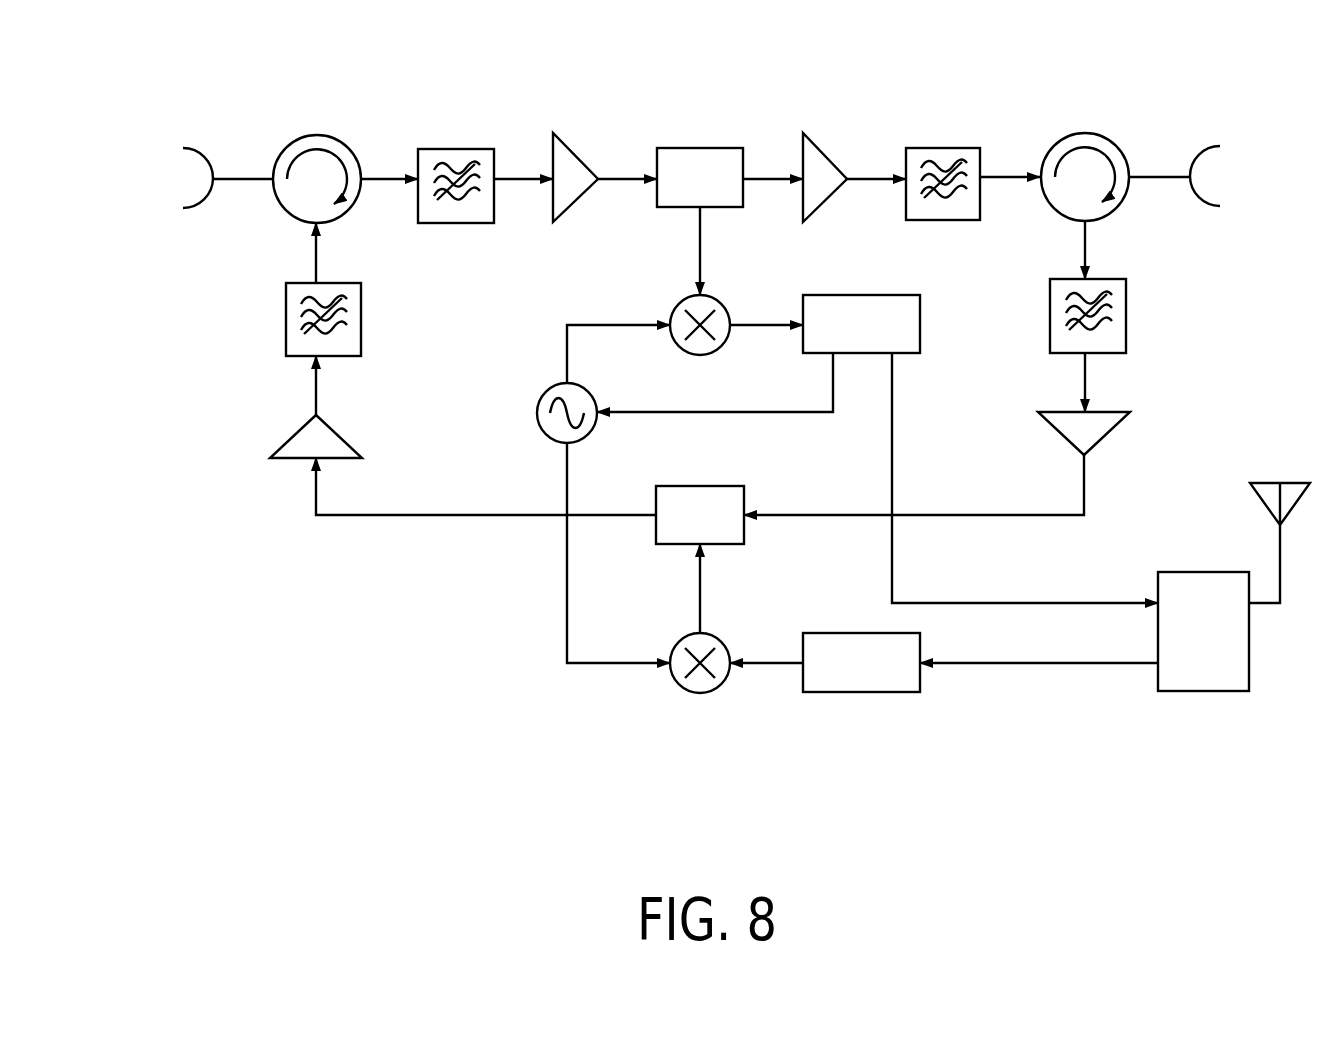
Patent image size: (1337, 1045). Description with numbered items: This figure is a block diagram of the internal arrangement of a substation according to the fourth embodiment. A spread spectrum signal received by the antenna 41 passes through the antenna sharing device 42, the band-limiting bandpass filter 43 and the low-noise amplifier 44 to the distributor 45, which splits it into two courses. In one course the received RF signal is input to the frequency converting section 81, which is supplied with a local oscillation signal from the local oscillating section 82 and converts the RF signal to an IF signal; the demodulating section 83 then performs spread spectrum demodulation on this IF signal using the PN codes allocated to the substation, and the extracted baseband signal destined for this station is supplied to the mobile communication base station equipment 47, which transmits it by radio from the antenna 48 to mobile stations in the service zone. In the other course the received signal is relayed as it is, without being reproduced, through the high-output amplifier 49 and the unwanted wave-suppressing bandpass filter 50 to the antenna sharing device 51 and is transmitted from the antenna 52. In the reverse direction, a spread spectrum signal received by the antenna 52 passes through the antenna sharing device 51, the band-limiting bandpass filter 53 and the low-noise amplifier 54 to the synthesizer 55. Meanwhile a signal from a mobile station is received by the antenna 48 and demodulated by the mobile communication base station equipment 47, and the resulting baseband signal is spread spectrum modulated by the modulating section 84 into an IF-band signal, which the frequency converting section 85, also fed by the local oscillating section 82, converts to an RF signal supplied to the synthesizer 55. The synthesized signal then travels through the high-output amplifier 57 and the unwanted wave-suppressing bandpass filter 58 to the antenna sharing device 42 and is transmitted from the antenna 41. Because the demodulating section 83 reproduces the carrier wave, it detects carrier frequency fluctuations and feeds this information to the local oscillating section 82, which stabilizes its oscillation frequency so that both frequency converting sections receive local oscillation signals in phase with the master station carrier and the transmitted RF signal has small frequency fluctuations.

The antenna 41 is at (208, 158).
The antenna sharing device 42 is at (339, 141).
The band-limiting bandpass filter 43 is at (460, 150).
The low-noise amplifier 44 is at (574, 155).
The distributor 45 is at (708, 148).
The high-output amplifier 49 is at (825, 156).
The unwanted wave-suppressing bandpass filter 50 is at (945, 148).
The antenna sharing device 51 is at (1083, 133).
The antenna 52 is at (1219, 146).
The band-limiting bandpass filter 53 is at (1126, 300).
The low-noise amplifier 54 is at (1103, 437).
The synthesizer 55 is at (708, 486).
The high-output amplifier 57 is at (339, 437).
The unwanted wave-suppressing bandpass filter 58 is at (286, 307).
The frequency converting section 81 is at (679, 304).
The local oscillating section 82 is at (546, 392).
The demodulating section 83 is at (880, 295).
The modulating section 84 is at (852, 633).
The frequency converting section 85 is at (679, 642).
The mobile communication base station equipment 47 is at (1207, 692).
The antenna 48 is at (1298, 483).